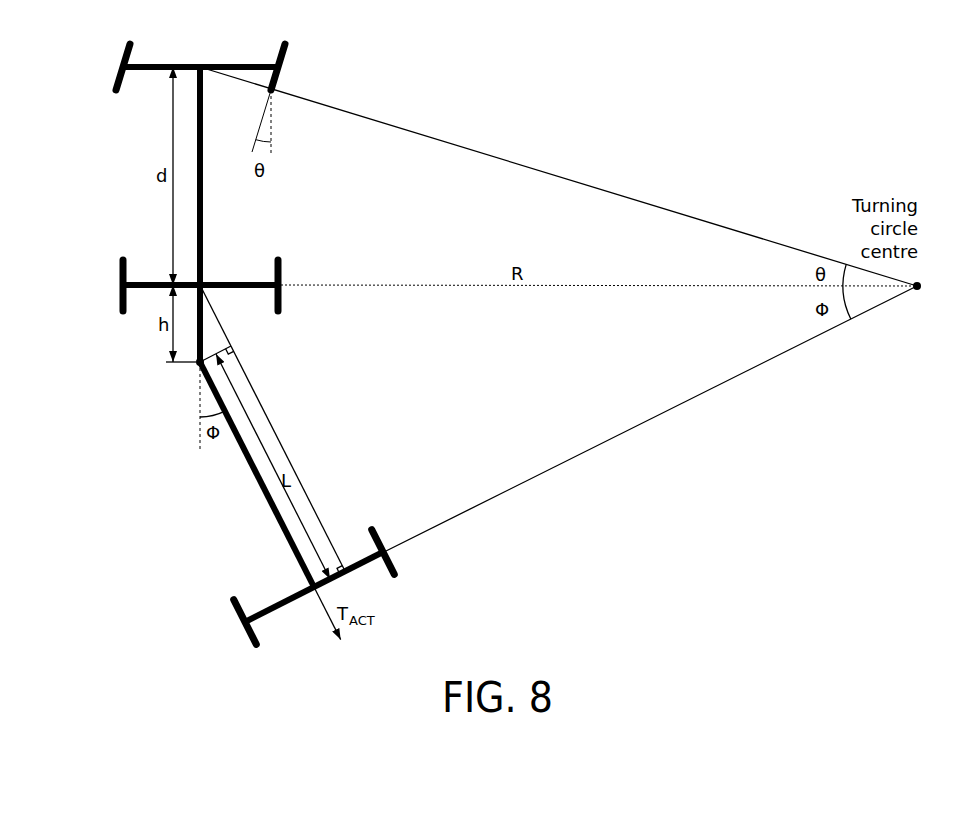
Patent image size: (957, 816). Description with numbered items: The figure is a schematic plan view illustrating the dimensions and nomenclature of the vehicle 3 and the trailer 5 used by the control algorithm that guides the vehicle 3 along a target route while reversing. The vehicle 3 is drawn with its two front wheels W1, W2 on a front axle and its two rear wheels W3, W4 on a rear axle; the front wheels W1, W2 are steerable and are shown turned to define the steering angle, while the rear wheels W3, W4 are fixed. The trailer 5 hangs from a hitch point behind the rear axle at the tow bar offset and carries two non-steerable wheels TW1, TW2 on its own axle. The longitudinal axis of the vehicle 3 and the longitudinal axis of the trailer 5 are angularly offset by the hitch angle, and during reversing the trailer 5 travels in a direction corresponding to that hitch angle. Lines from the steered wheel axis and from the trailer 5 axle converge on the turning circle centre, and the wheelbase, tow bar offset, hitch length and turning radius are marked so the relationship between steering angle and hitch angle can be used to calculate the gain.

The vehicle 3 is at (247, 198).
The trailer 5 is at (304, 501).
The front wheel W1 is at (124, 60).
The front wheel W2 is at (283, 55).
The rear wheel W3 is at (121, 272).
The rear wheel W4 is at (281, 271).
The trailer wheel TW1 is at (238, 612).
The trailer wheel TW2 is at (379, 541).